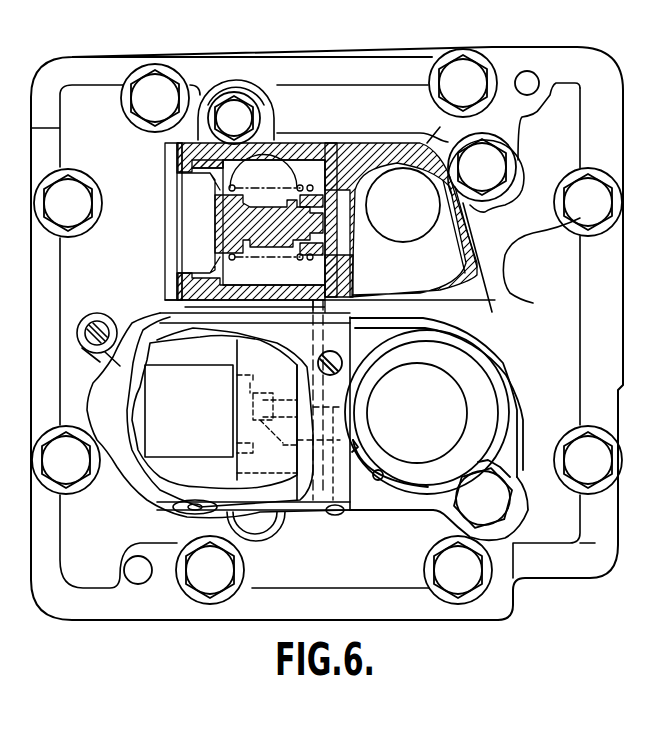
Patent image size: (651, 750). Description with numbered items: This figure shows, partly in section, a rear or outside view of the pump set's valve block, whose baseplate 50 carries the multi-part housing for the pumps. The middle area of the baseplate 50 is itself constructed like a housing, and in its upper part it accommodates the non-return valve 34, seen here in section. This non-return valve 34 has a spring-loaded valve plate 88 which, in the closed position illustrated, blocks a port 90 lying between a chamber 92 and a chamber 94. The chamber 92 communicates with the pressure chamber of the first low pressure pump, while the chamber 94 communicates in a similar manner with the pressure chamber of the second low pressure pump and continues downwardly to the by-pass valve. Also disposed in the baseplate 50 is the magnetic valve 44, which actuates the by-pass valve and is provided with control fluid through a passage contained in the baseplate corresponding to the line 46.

The baseplate 50 is at (98, 100).
The non-return valve 34 is at (333, 232).
The magnetic valve 44 is at (268, 400).
The line 46 is at (313, 342).
The valve plate 88 is at (323, 260).
The port 90 is at (358, 219).
The chamber 92 is at (320, 184).
The chamber 94 is at (450, 281).